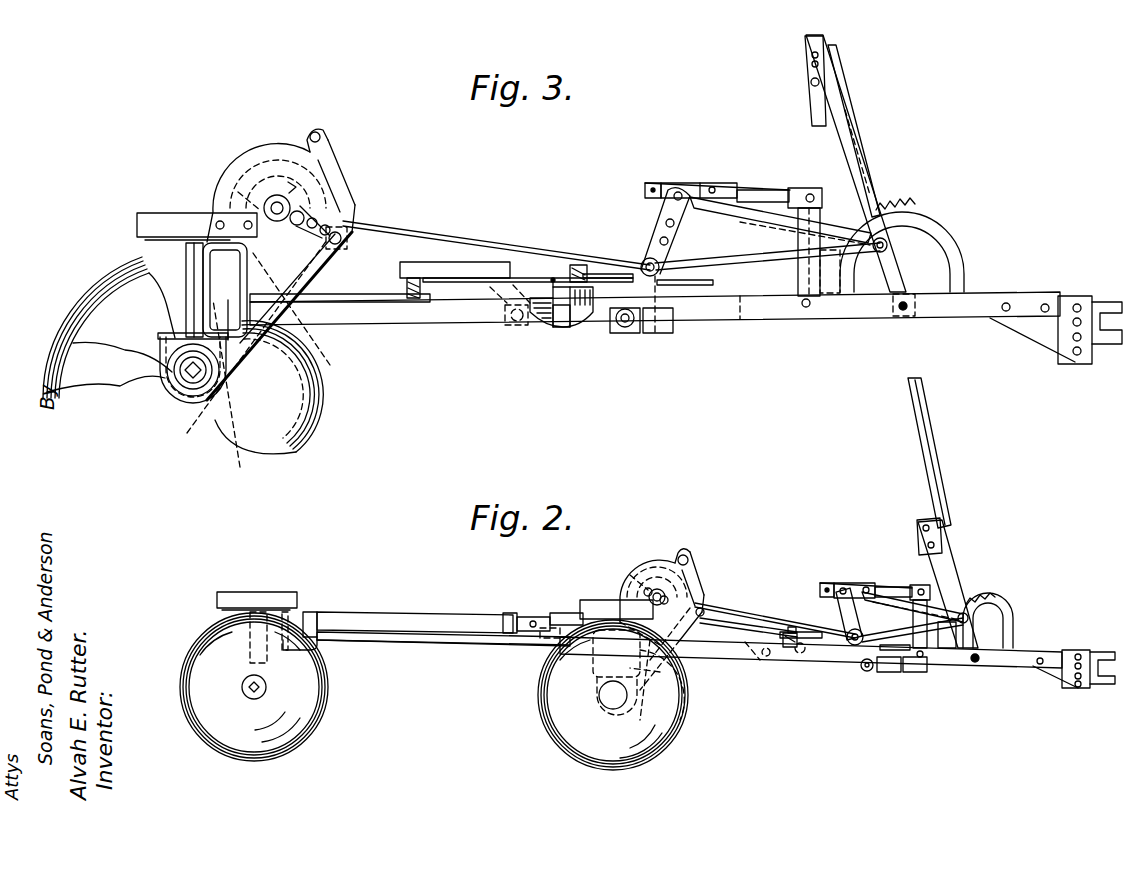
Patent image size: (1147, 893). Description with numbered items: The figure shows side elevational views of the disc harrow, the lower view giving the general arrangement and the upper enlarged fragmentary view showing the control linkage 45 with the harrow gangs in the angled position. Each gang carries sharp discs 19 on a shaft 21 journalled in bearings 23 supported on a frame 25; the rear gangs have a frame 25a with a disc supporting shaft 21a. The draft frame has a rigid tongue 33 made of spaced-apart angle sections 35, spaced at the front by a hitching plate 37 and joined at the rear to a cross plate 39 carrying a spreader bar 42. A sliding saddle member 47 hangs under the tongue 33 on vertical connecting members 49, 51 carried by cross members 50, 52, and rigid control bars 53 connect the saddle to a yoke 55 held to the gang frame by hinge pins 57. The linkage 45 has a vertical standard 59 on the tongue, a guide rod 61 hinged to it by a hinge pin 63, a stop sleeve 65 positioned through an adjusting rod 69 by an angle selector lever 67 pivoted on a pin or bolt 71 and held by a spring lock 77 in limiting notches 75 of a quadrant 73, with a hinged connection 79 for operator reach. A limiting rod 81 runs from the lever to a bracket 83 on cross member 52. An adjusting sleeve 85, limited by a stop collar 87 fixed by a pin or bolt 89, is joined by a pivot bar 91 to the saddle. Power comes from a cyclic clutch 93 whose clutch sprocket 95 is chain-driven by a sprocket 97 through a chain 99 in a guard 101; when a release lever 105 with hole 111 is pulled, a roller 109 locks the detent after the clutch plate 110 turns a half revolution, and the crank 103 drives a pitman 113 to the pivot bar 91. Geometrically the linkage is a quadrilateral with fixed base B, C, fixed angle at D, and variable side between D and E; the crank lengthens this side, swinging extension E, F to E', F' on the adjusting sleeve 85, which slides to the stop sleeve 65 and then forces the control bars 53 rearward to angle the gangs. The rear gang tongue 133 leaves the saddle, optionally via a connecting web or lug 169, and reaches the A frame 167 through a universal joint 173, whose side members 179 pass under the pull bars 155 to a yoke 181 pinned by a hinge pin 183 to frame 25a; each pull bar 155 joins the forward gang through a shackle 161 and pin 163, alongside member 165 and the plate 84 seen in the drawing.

In FIG. 3, the discs 19 is at (78, 292).
In FIG. 2, the discs 19 is at (270, 748).
In FIG. 2, the shaft 21 is at (599, 697).
In FIG. 2, the disc supporting shaft 21a is at (248, 692).
In FIG. 3, the bearings 23 is at (170, 374).
In FIG. 3, the frame 25 is at (150, 220).
In FIG. 2, the frame 25 is at (590, 606).
In FIG. 2, the rear gang frame 25a is at (228, 592).
In FIG. 3, the tongue 33 is at (845, 318).
In FIG. 2, the tongue 33 is at (1025, 668).
In FIG. 3, the angle sections 35 is at (778, 320).
In FIG. 2, the angle sections 35 is at (990, 665).
In FIG. 3, the hitching plate 37 is at (1068, 300).
In FIG. 2, the hitching plate 37 is at (1072, 652).
In FIG. 3, the cross plate 39 is at (425, 303).
In FIG. 3, the spreader bar 42 is at (410, 300).
In FIG. 3, the control linkage 45 is at (757, 163).
In FIG. 2, the control linkage 45 is at (917, 568).
In FIG. 3, the sliding saddle member 47 is at (563, 330).
In FIG. 2, the sliding saddle member 47 is at (886, 674).
In FIG. 3, the connecting member 49 is at (672, 322).
In FIG. 2, the connecting member 49 is at (916, 674).
In FIG. 3, the cross member 50 is at (700, 283).
In FIG. 2, the cross member 50 is at (910, 660).
In FIG. 3, the connecting member 51 is at (548, 326).
In FIG. 3, the cross member 52 is at (570, 264).
In FIG. 2, the cross member 52 is at (792, 650).
In FIG. 3, the control bars 53 is at (478, 320).
In FIG. 2, the control bars 53 is at (752, 662).
In FIG. 3, the yoke 55 is at (248, 335).
In FIG. 2, the yoke 55 is at (660, 672).
In FIG. 3, the hinge pins 57 is at (216, 290).
In FIG. 2, the hinge pins 57 is at (616, 653).
In FIG. 3, the vertical standard 59 is at (795, 247).
In FIG. 2, the vertical standard 59 is at (925, 625).
In FIG. 3, the guide rod 61 is at (762, 190).
In FIG. 3, the hinge pin 63 is at (810, 194).
In FIG. 2, the hinge pin 63 is at (928, 584).
In FIG. 3, the stop sleeve 65 is at (720, 205).
In FIG. 2, the stop sleeve 65 is at (880, 586).
In FIG. 3, the angle selector lever 67 is at (855, 165).
In FIG. 2, the angle selector lever 67 is at (915, 590).
In FIG. 3, the adjusting rod 69 is at (745, 228).
In FIG. 2, the adjusting rod 69 is at (895, 608).
In FIG. 3, the pin or bolt 71 is at (900, 312).
In FIG. 2, the pin or bolt 71 is at (973, 664).
In FIG. 3, the quadrant 73 is at (960, 226).
In FIG. 2, the quadrant 73 is at (1012, 605).
In FIG. 3, the limiting notches 75 is at (905, 192).
In FIG. 2, the limiting notches 75 is at (985, 592).
In FIG. 3, the spring lock 77 is at (875, 182).
In FIG. 3, the hinged connection 79 is at (808, 82).
In FIG. 2, the hinged connection 79 is at (944, 535).
In FIG. 3, the limiting rod 81 is at (700, 258).
In FIG. 2, the limiting rod 81 is at (790, 630).
In FIG. 3, the bracket 83 is at (551, 278).
In FIG. 2, the bracket 83 is at (805, 655).
In FIG. 3, the nut 84 is at (580, 264).
In FIG. 3, the adjusting sleeve 85 is at (703, 183).
In FIG. 2, the adjusting sleeve 85 is at (865, 584).
In FIG. 3, the stop collar 87 is at (648, 184).
In FIG. 2, the stop collar 87 is at (824, 582).
In FIG. 3, the pin or bolt 89 is at (646, 190).
In FIG. 2, the pin or bolt 89 is at (830, 584).
In FIG. 3, the pivot bar 91 is at (662, 230).
In FIG. 2, the pivot bar 91 is at (840, 600).
In FIG. 3, the cyclic clutch 93 is at (272, 140).
In FIG. 2, the cyclic clutch 93 is at (672, 558).
In FIG. 3, the clutch sprocket 95 is at (262, 150).
In FIG. 3, the sprocket 97 is at (192, 432).
In FIG. 3, the chain 99 is at (305, 350).
In FIG. 2, the chain 99 is at (680, 718).
In FIG. 3, the guard 101 is at (271, 368).
In FIG. 2, the guard 101 is at (660, 700).
In FIG. 3, the crank 103 is at (316, 205).
In FIG. 2, the crank 103 is at (642, 592).
In FIG. 3, the release lever 105 is at (334, 152).
In FIG. 2, the release lever 105 is at (698, 572).
In FIG. 3, the roller 109 is at (345, 225).
In FIG. 2, the roller 109 is at (704, 606).
In FIG. 3, the clutch plate 110 is at (238, 192).
In FIG. 2, the clutch plate 110 is at (633, 575).
In FIG. 3, the hole 111 is at (318, 133).
In FIG. 2, the hole 111 is at (690, 556).
In FIG. 3, the pitman 113 is at (460, 238).
In FIG. 2, the pitman 113 is at (760, 612).
In FIG. 3, the rear gang tongue 133 is at (415, 262).
In FIG. 2, the rear gang tongue 133 is at (745, 624).
In FIG. 2, the pull bar 155 is at (434, 612).
In FIG. 2, the shackle 161 is at (508, 613).
In FIG. 2, the pin 163 is at (530, 616).
In FIG. 2, the bracket 165 is at (556, 612).
In FIG. 2, the A frame 167 is at (443, 654).
In FIG. 3, the connecting web or lug 169 is at (508, 326).
In FIG. 2, the connecting web or lug 169 is at (768, 658).
In FIG. 2, the universal joint 173 is at (545, 640).
In FIG. 2, the side members 179 is at (400, 642).
In FIG. 2, the yoke 181 is at (318, 645).
In FIG. 2, the hinge pin 183 is at (318, 612).
In FIG. 3, the point B is at (258, 352).
In FIG. 2, the point B is at (670, 680).
In FIG. 3, the point C is at (624, 328).
In FIG. 2, the point C is at (864, 672).
In FIG. 3, the point D is at (277, 208).
In FIG. 2, the point D is at (657, 590).
In FIG. 2, the point E is at (830, 619).
In FIG. 3, the point E' is at (629, 280).
In FIG. 2, the point F is at (835, 564).
In FIG. 3, the point F' is at (670, 170).